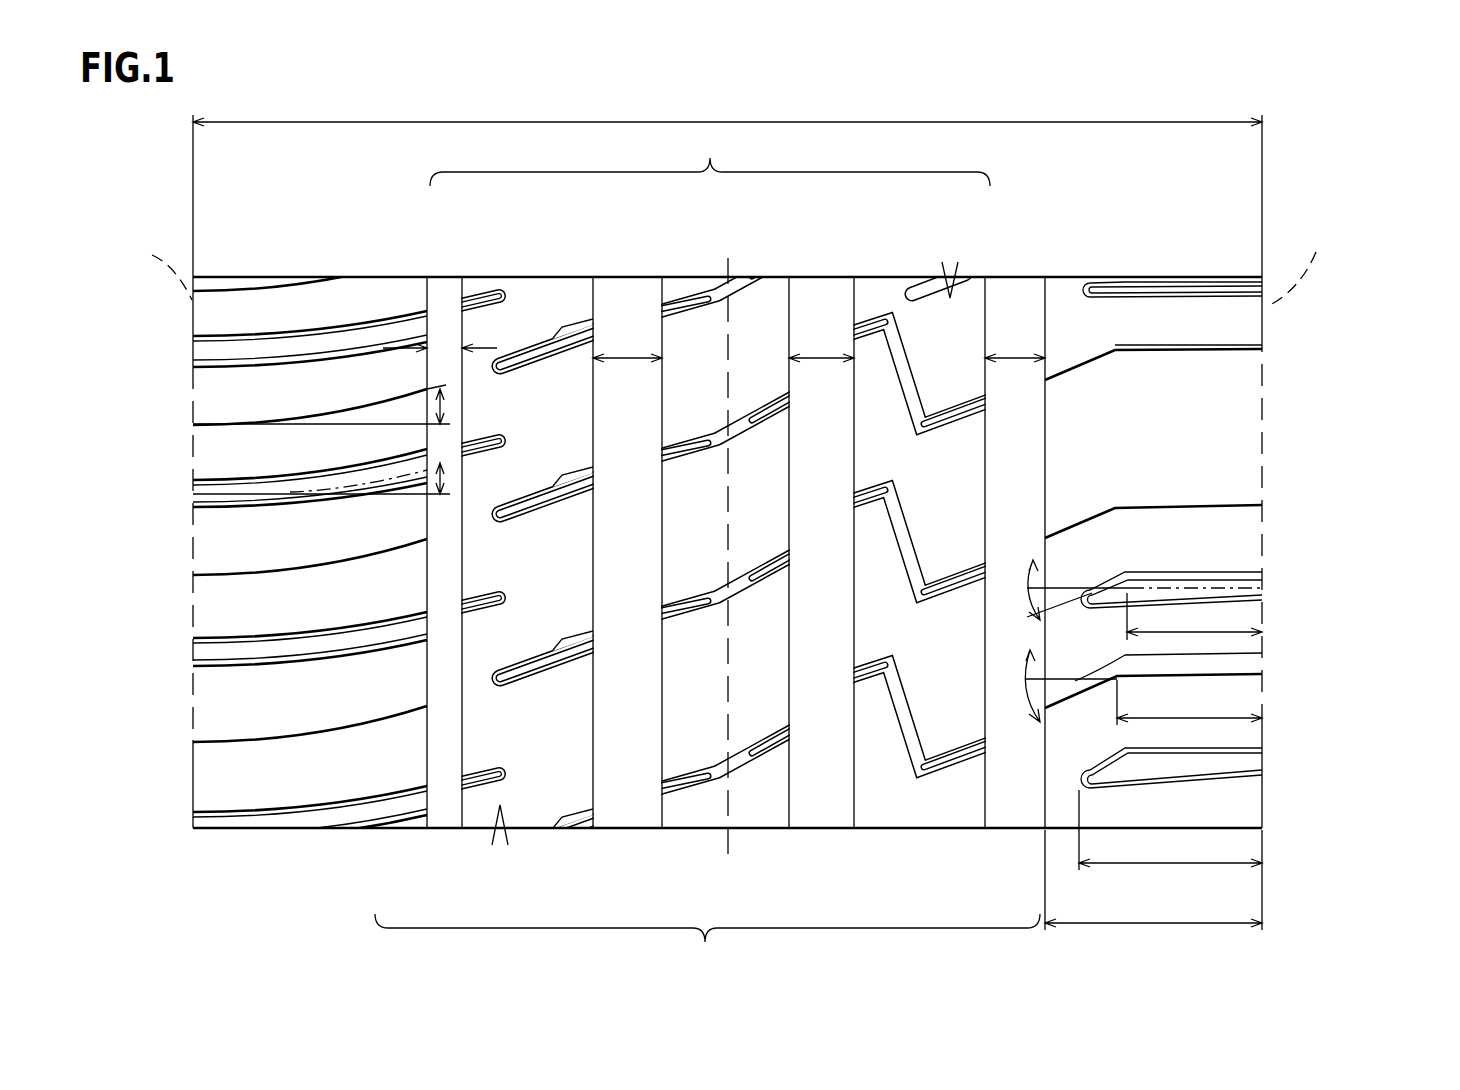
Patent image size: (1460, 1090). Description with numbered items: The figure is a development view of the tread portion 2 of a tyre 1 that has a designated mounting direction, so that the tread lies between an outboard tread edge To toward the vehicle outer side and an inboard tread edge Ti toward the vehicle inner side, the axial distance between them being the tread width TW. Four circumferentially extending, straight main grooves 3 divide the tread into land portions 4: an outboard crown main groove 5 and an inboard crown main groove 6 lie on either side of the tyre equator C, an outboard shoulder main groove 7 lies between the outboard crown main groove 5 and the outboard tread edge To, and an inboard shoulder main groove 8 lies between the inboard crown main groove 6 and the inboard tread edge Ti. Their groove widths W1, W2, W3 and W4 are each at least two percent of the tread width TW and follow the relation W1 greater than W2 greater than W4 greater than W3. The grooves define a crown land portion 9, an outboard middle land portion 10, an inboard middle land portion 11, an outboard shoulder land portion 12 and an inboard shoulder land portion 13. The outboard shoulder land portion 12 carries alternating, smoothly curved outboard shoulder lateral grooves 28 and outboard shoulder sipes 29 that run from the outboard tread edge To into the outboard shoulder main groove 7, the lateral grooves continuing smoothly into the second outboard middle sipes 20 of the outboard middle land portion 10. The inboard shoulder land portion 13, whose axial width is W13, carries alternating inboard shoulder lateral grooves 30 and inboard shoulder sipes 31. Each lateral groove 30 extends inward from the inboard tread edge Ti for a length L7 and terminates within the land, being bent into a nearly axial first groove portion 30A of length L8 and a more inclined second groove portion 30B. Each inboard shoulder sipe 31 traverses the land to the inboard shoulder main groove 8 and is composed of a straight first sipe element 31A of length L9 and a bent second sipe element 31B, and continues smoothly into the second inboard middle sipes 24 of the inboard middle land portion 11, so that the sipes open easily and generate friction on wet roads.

The tyre 1 is at (1334, 158).
The tread portion 2 is at (1138, 208).
The main grooves 3 is at (710, 156).
The land portions 4 is at (707, 944).
The outboard crown main groove 5 is at (629, 310).
The inboard crown main groove 6 is at (820, 312).
The outboard shoulder main groove 7 is at (442, 300).
The inboard shoulder main groove 8 is at (1012, 313).
The crown land portion 9 is at (757, 800).
The outboard middle land portion 10 is at (526, 571).
The inboard middle land portion 11 is at (911, 600).
The outboard shoulder land portion 12 is at (266, 591).
The inboard shoulder land portion 13 is at (1219, 604).
The second outboard middle sipes 20 is at (484, 440).
The second inboard middle sipes 24 is at (947, 762).
The outboard shoulder lateral grooves 28 is at (282, 487).
The outboard shoulder sipes 29 is at (300, 405).
The inboard shoulder lateral grooves 30 is at (1266, 554).
The first groove portion 30A is at (1198, 583).
The second groove portion 30B is at (1100, 588).
The inboard shoulder sipes 31 is at (1248, 530).
The first sipe element 31A is at (1193, 677).
The second sipe element 31B is at (1262, 653).
The tread width TW is at (727, 182).
The groove width of outboard crown main groove W1 is at (627, 358).
The groove width of inboard crown main groove W2 is at (821, 358).
The groove width of outboard shoulder main groove W3 is at (443, 348).
The groove width of inboard shoulder main groove W4 is at (1014, 358).
The width of inboard shoulder land portion W13 is at (1153, 894).
The length of inboard shoulder lateral groove L7 is at (1170, 847).
The length of first groove portion L8 is at (1197, 630).
The length of first sipe element L9 is at (1190, 720).
The tyre equator C is at (728, 543).
The outboard tread edge To is at (156, 259).
The inboard tread edge Ti is at (1300, 262).